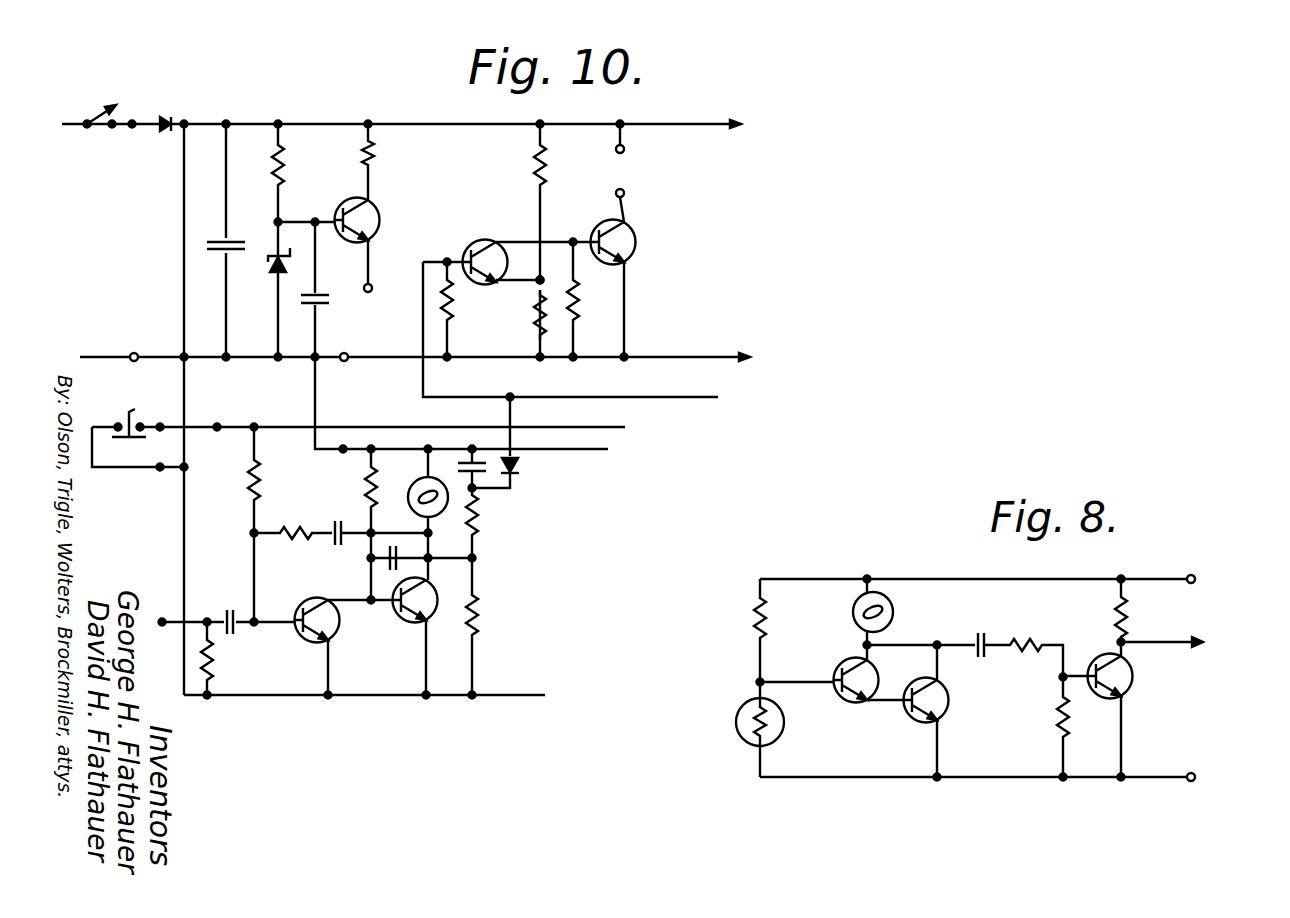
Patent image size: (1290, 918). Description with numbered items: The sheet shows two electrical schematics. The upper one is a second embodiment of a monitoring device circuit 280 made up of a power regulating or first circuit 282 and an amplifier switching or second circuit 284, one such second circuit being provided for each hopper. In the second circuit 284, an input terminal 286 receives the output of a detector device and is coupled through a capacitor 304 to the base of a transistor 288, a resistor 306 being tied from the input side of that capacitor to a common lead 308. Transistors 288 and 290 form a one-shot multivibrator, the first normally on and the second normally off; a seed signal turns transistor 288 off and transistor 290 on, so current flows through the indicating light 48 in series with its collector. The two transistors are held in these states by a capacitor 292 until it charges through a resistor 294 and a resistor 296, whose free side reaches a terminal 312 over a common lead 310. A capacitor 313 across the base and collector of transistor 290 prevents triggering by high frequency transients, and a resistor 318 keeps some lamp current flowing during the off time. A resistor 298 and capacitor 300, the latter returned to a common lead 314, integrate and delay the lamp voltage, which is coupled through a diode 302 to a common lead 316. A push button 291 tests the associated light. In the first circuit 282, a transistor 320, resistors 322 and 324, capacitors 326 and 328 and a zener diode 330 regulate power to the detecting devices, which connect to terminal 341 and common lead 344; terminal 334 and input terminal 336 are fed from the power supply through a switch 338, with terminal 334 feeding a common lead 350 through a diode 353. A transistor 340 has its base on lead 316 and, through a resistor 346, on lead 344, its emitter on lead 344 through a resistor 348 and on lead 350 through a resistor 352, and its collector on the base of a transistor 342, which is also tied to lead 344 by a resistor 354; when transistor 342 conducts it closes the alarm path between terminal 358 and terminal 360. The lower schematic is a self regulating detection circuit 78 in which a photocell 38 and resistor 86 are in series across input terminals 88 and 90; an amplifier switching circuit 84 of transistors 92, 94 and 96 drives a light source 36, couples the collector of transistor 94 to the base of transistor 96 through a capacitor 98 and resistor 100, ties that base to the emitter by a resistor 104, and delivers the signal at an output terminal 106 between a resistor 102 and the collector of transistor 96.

In FIG. 10, the monitoring device circuit 280 is at (313, 111).
In FIG. 10, the switch 338 is at (112, 113).
In FIG. 10, the terminal 334 is at (138, 121).
In FIG. 10, the diode 353 is at (175, 120).
In FIG. 10, the power regulating circuit 282 is at (172, 221).
In FIG. 10, the capacitor 328 is at (234, 240).
In FIG. 10, the resistor 322 is at (284, 172).
In FIG. 10, the zener diode 330 is at (268, 261).
In FIG. 10, the capacitor 326 is at (333, 303).
In FIG. 10, the resistor 324 is at (377, 158).
In FIG. 10, the transistor 320 is at (368, 210).
In FIG. 10, the terminal 341 is at (373, 292).
In FIG. 10, the input terminal 336 is at (134, 353).
In FIG. 10, the common lead 344 is at (348, 361).
In FIG. 10, the common lead 350 is at (562, 123).
In FIG. 10, the resistor 352 is at (548, 160).
In FIG. 10, the terminal 360 is at (625, 150).
In FIG. 10, the terminal 358 is at (625, 193).
In FIG. 10, the transistor 342 is at (637, 242).
In FIG. 10, the transistor 340 is at (485, 240).
In FIG. 10, the resistor 346 is at (452, 302).
In FIG. 10, the resistor 348 is at (533, 325).
In FIG. 10, the resistor 354 is at (578, 318).
In FIG. 10, the common lead 316 is at (560, 400).
In FIG. 10, the diode 302 is at (520, 473).
In FIG. 10, the common lead 310 is at (220, 426).
In FIG. 10, the terminal 312 is at (178, 426).
In FIG. 10, the push button 291 is at (126, 413).
In FIG. 10, the amplifier switching circuit 284 is at (171, 526).
In FIG. 10, the common lead 314 is at (343, 446).
In FIG. 10, the resistor 296 is at (260, 476).
In FIG. 10, the resistor 294 is at (293, 514).
In FIG. 10, the capacitor 292 is at (334, 543).
In FIG. 10, the indicating light 48 is at (406, 523).
In FIG. 10, the capacitor 313 is at (386, 563).
In FIG. 10, the capacitor 300 is at (487, 485).
In FIG. 10, the resistor 298 is at (484, 522).
In FIG. 10, the resistor 318 is at (482, 606).
In FIG. 10, the transistor 290 is at (433, 624).
In FIG. 10, the transistor 288 is at (336, 641).
In FIG. 10, the capacitor 304 is at (230, 610).
In FIG. 10, the resistor 306 is at (214, 661).
In FIG. 10, the input terminal 286 is at (160, 618).
In FIG. 10, the common lead 308 is at (290, 697).
In FIG. 8, the self regulating electrical circuit 78 is at (1092, 575).
In FIG. 8, the input terminal 88 is at (1161, 577).
In FIG. 8, the amplifier switching circuit 84 is at (1029, 789).
In FIG. 8, the input terminal 90 is at (1157, 781).
In FIG. 8, the resistor 86 is at (752, 620).
In FIG. 8, the photocell 38 is at (738, 730).
In FIG. 8, the transistor 92 is at (870, 672).
In FIG. 8, the light source 36 is at (893, 606).
In FIG. 8, the transistor 94 is at (950, 702).
In FIG. 8, the capacitor 98 is at (983, 630).
In FIG. 8, the resistor 100 is at (1022, 636).
In FIG. 8, the resistor 104 is at (1057, 722).
In FIG. 8, the transistor 96 is at (1130, 693).
In FIG. 8, the resistor 102 is at (1129, 610).
In FIG. 8, the output terminal 106 is at (1168, 645).